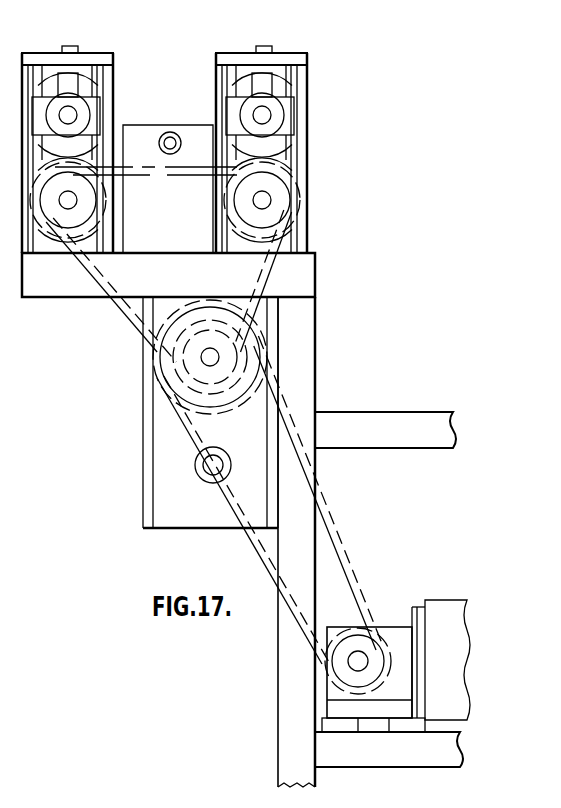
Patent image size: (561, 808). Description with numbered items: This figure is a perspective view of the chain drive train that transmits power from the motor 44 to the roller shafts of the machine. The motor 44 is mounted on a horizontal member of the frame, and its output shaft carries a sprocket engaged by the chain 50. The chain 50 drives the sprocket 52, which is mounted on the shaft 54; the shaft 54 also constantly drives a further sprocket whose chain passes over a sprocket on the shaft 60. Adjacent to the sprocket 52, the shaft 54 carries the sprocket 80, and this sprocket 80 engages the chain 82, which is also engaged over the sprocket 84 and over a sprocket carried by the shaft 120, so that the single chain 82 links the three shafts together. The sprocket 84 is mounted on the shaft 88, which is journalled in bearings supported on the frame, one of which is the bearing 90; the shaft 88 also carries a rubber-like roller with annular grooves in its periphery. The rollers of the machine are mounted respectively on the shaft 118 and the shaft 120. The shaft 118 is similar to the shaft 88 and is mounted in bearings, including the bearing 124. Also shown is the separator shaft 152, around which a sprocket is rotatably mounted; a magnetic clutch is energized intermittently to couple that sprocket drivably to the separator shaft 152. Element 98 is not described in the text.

The motor 44 is at (427, 607).
The chain 50 is at (325, 490).
The sprocket 52 is at (237, 383).
The shaft 54 is at (216, 355).
The shaft 60 is at (203, 479).
The sprocket 80 is at (241, 359).
The chain 82 is at (148, 271).
The sprocket 84 is at (280, 191).
The shaft 88 is at (267, 115).
The bearing 90 is at (266, 83).
The belt 98 is at (289, 221).
The shaft 118 is at (73, 115).
The shaft 120 is at (114, 212).
The bearing 124 is at (72, 85).
The separator shaft 152 is at (172, 131).